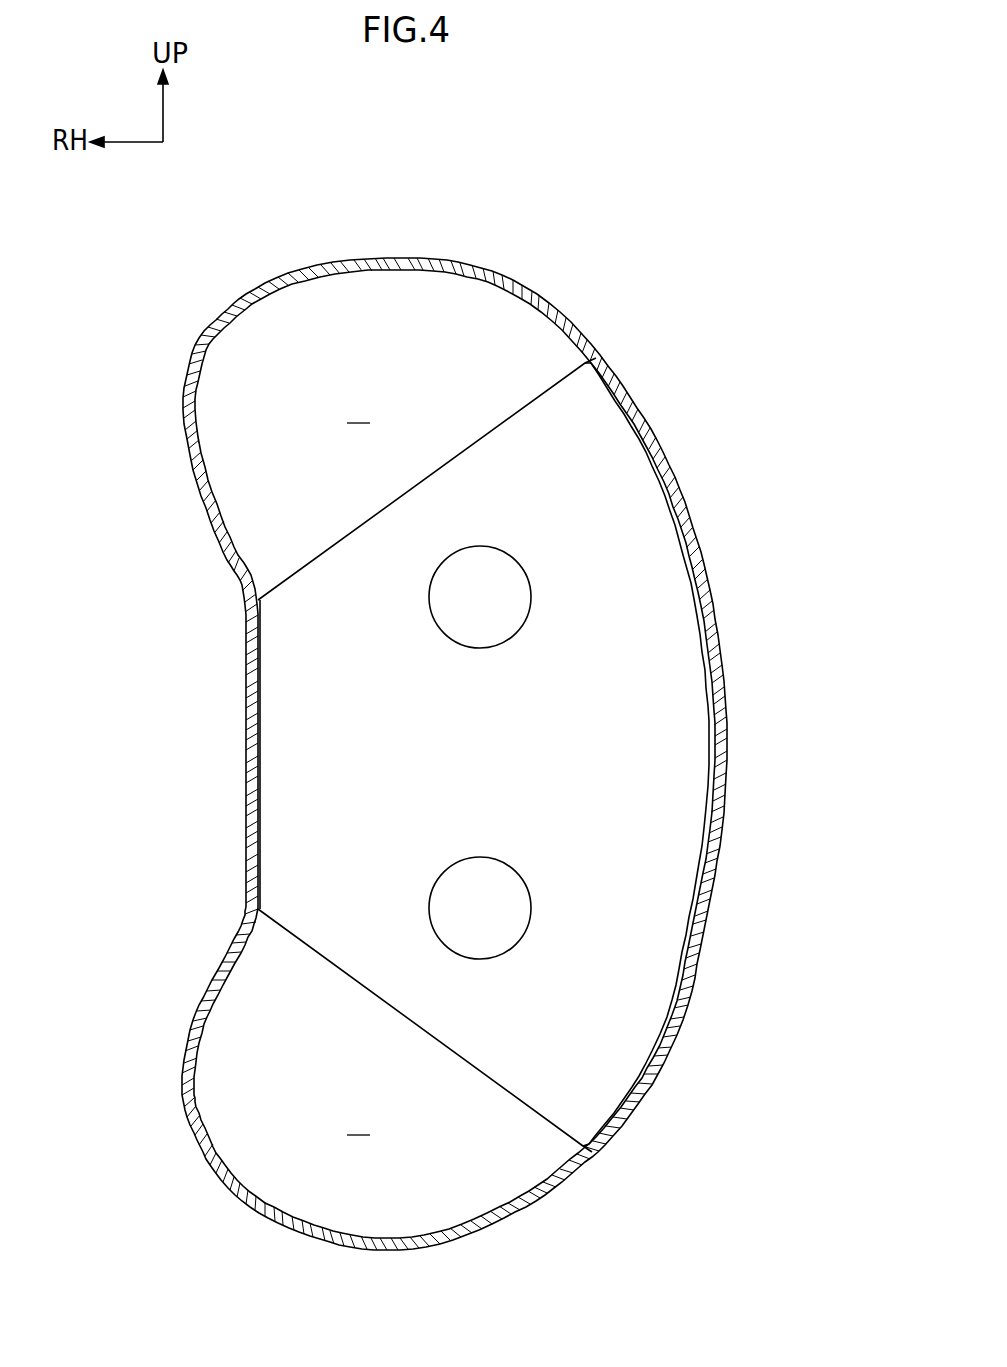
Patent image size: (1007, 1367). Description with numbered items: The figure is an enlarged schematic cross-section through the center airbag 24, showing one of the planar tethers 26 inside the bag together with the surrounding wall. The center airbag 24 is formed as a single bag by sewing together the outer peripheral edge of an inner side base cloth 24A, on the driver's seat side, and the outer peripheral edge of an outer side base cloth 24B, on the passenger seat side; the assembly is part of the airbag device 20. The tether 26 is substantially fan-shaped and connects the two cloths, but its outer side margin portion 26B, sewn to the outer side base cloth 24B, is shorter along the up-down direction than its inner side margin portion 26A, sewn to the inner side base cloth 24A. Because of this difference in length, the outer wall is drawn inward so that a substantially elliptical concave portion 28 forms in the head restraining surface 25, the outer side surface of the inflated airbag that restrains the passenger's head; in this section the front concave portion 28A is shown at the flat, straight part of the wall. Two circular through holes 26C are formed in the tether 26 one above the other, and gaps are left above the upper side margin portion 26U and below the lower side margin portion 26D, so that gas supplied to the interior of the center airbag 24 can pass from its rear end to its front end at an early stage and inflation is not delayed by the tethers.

The seat side support 20 is at (565, 247).
The center airbag 24 is at (186, 406).
The inner side base cloth 24A is at (727, 738).
The outer side base cloth 24B is at (207, 515).
The head restraining surface 25 is at (243, 862).
The tether 26 is at (455, 457).
The inner side margin portion 26A is at (683, 561).
The outer side margin portion 26B is at (262, 688).
The circular through hole 26C is at (522, 622).
The lower side margin portion 26D is at (483, 1075).
The upper side margin portion 26U is at (547, 388).
The concave portion 28 is at (146, 756).
The concave portion at the front side 28A is at (243, 797).